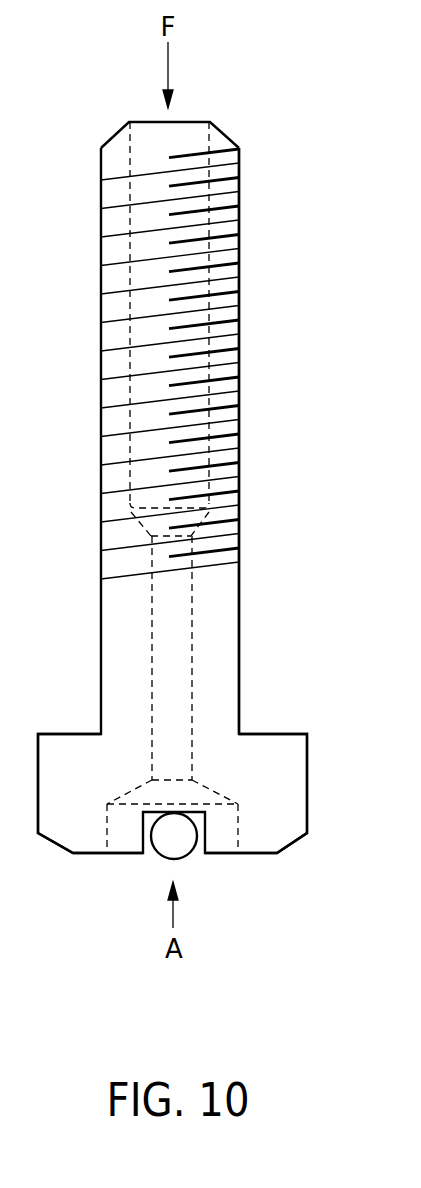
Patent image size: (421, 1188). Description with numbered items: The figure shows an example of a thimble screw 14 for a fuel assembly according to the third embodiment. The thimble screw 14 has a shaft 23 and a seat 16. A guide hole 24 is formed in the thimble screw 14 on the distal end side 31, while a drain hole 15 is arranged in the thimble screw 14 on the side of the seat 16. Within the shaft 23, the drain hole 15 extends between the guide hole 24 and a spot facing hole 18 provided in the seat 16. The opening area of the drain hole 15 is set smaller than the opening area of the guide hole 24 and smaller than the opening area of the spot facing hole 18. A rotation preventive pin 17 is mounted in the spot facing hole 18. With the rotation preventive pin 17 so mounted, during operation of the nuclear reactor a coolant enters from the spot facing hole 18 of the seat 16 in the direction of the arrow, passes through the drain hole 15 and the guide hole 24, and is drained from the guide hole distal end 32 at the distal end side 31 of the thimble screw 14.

The thimble screw 14 is at (262, 242).
The drain hole 15 is at (180, 663).
The seat 16 is at (308, 768).
The rotation preventive pin 17 is at (187, 843).
The spot facing hole 18 is at (120, 843).
The shaft 23 is at (233, 426).
The guide hole 24 is at (182, 303).
The distal end side 31 is at (101, 225).
The guide hole distal end 32 is at (173, 122).